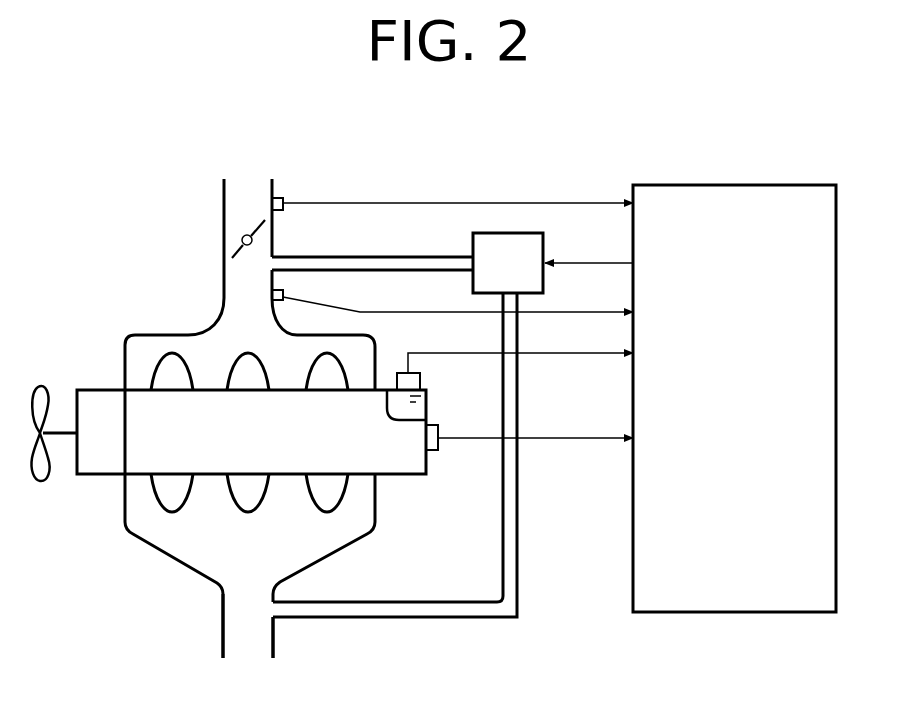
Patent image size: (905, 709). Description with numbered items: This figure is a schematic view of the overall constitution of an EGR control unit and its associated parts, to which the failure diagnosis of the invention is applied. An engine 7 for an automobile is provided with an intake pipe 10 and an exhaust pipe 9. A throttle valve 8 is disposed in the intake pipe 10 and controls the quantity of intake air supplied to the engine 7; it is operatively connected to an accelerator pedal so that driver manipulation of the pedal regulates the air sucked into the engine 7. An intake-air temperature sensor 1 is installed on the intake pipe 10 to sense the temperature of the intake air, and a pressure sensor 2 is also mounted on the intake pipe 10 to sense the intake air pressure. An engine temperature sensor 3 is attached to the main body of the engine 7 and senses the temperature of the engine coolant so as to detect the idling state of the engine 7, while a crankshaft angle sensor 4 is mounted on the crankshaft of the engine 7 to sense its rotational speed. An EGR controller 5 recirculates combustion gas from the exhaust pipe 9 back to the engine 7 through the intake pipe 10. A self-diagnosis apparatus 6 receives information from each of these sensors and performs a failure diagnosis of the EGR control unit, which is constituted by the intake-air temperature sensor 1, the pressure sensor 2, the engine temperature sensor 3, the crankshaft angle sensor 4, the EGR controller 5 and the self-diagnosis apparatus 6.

The intake-air temperature sensor 1 is at (281, 196).
The pressure sensor 2 is at (283, 290).
The engine temperature sensor 3 is at (422, 381).
The crankshaft angle sensor 4 is at (440, 445).
The EGR controller 5 is at (545, 243).
The self-diagnosis apparatus 6 is at (750, 185).
The engine 7 is at (95, 480).
The throttle valve 8 is at (243, 237).
The exhaust pipe 9 is at (222, 608).
The intake pipe 10 is at (224, 283).